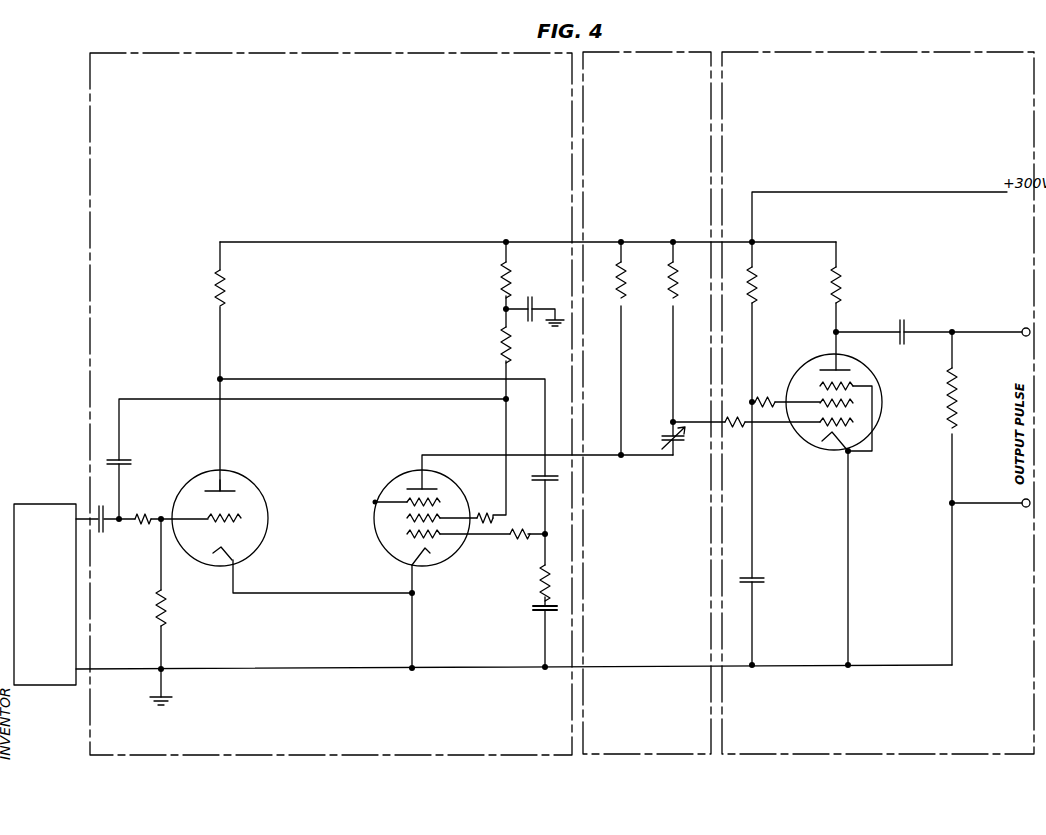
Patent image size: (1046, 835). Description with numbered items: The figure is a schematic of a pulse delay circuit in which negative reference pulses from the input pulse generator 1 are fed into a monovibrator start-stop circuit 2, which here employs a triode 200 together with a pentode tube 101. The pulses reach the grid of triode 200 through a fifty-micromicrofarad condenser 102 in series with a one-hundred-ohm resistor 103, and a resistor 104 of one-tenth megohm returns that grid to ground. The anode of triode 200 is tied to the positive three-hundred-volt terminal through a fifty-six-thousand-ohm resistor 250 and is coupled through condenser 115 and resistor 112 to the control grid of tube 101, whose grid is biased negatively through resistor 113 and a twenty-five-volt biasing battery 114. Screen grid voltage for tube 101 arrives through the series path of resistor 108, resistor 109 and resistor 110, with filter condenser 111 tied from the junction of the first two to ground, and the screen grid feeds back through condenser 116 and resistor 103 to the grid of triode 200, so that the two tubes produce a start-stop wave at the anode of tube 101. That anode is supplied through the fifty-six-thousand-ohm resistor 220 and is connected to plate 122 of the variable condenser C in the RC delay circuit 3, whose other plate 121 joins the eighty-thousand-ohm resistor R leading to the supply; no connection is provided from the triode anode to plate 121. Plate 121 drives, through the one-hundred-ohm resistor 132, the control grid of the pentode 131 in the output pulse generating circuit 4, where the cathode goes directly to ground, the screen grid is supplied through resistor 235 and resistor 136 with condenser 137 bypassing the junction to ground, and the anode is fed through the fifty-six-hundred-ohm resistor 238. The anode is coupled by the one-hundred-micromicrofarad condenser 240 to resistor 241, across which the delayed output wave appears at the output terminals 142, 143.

The input pulse generator 1 is at (36, 505).
The monovibrator start-stop circuit 2 is at (347, 57).
The RC delay circuit 3 is at (664, 55).
The third circuit section 4 is at (880, 55).
The tube 101 is at (462, 494).
The condenser 102 is at (110, 492).
The resistor 103 is at (142, 513).
The resistor 104 is at (166, 607).
The resistor 108 is at (511, 270).
The resistor 109 is at (498, 342).
The resistor 110 is at (492, 504).
The filter condenser 111 is at (537, 297).
The resistor 112 is at (530, 540).
The resistor 113 is at (538, 582).
The biasing battery 114 is at (534, 609).
The condenser 115 is at (560, 479).
The condenser 116 is at (124, 458).
The plate of condenser C 121 is at (668, 434).
The plate of condenser C 122 is at (677, 445).
The pentode electronic device 131 is at (876, 378).
The resistor 132 is at (736, 430).
The resistor 136 is at (778, 380).
The condenser 137 is at (766, 580).
The output terminal 142 is at (1023, 327).
The output terminal 143 is at (1024, 508).
The triode 200 is at (262, 499).
The resistor 220 is at (626, 282).
The resistor 235 is at (757, 284).
The resistor 238 is at (841, 284).
The condenser 240 is at (903, 320).
The resistor 241 is at (946, 406).
The resistor 250 is at (226, 282).
The resistor R is at (678, 280).
The variable condenser C is at (694, 432).